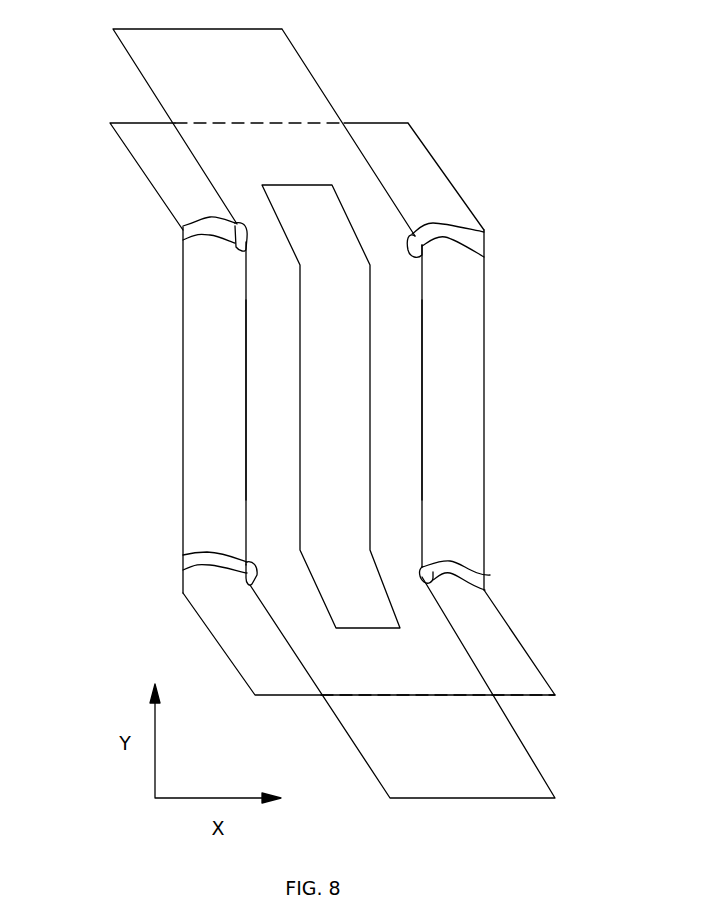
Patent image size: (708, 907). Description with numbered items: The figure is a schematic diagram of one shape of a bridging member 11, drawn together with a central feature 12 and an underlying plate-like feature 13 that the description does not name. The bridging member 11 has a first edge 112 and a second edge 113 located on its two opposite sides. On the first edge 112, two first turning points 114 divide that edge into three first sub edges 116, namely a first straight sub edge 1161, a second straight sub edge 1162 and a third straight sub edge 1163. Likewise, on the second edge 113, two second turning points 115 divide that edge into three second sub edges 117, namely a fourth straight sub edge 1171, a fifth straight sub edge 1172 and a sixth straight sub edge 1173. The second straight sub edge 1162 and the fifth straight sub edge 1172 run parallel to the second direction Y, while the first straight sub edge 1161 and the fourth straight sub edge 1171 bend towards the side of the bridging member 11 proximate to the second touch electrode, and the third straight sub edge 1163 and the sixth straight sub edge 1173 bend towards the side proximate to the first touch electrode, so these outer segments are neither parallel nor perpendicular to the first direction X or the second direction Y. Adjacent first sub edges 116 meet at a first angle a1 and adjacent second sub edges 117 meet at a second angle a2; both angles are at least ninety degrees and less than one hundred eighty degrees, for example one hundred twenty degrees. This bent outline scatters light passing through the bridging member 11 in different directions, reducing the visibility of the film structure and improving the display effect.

The bridging member 11 is at (277, 60).
The opening 12 is at (330, 217).
The support plate 13 is at (405, 141).
The first edge 112 is at (423, 421).
The second edge 113 is at (247, 419).
The first turning point 114 is at (484, 257).
The second turning point 115 is at (183, 226).
The first sub edge 116 is at (420, 505).
The first straight sub edge 1161 is at (403, 210).
The second straight sub edge 1162 is at (420, 465).
The third straight sub edge 1163 is at (462, 645).
The second sub edge 117 is at (247, 497).
The fourth straight sub edge 1171 is at (233, 223).
The fifth straight sub edge 1172 is at (247, 455).
The sixth straight sub edge 1173 is at (262, 620).
The first angle a1 is at (484, 232).
The second angle a2 is at (183, 240).